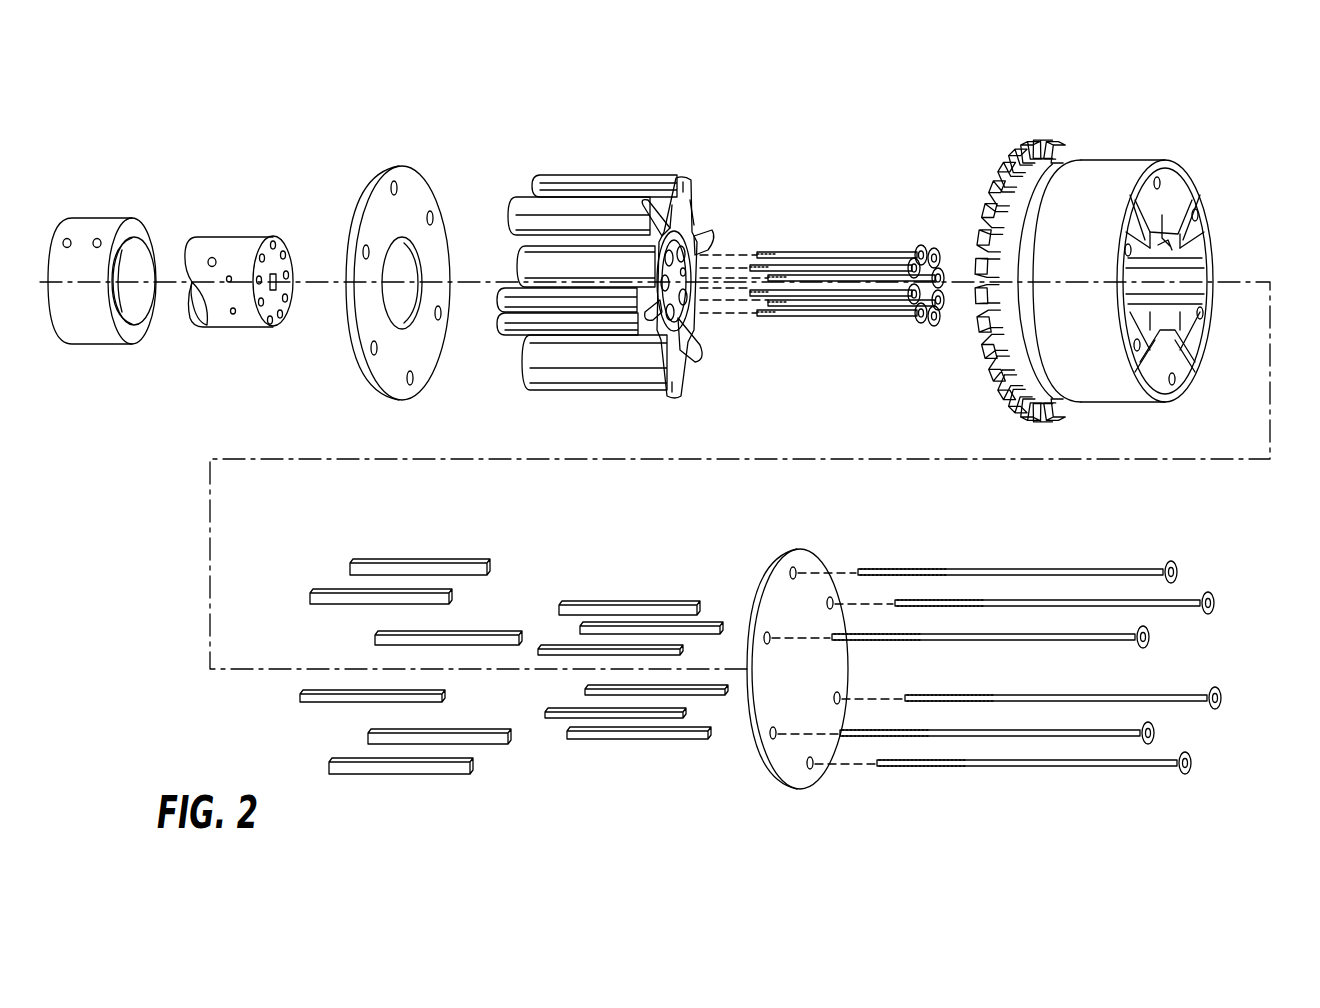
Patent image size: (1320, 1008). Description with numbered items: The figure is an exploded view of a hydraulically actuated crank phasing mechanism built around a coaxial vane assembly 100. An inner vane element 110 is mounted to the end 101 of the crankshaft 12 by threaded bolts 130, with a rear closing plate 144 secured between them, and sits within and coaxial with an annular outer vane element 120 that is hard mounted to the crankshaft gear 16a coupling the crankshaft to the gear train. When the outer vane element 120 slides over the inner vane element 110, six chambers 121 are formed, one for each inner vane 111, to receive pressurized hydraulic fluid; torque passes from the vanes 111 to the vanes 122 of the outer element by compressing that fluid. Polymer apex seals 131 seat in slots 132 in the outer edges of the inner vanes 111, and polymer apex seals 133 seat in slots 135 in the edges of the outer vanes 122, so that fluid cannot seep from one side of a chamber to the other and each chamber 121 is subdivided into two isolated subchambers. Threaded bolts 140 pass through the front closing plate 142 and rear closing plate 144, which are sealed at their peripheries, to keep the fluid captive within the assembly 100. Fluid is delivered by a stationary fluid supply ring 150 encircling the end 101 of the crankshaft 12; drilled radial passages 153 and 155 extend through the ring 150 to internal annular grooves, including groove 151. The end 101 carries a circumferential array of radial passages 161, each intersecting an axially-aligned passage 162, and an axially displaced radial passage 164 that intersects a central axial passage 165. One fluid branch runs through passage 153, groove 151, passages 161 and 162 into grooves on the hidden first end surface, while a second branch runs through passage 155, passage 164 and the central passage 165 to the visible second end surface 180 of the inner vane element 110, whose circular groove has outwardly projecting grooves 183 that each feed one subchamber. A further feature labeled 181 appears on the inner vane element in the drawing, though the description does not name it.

The coaxial vane assembly 100 is at (1230, 110).
The inner vane element 110 is at (500, 199).
The vanes 111 is at (690, 205).
The slots 132 is at (690, 180).
The outwardly-projecting grooves 183 is at (650, 258).
The second end surface 180 is at (678, 320).
The fan blade 181 is at (700, 340).
The threaded bolts 130 is at (850, 313).
The crankshaft gear 16a is at (1005, 183).
The annular outer vane element 120 is at (1097, 372).
The vanes 122 is at (1198, 225).
The chambers 121 is at (1190, 265).
The slots 135 is at (1168, 240).
The rear closing plate 144 is at (384, 368).
The fluid supply ring 150 is at (82, 318).
The annular groove 151 is at (132, 268).
The drilled radial passage 153 is at (97, 241).
The drilled radial passage 155 is at (67, 241).
The end of the crankshaft 101 is at (232, 328).
The crankshaft 12 is at (215, 305).
The radial passage 164 is at (212, 260).
The radial passages 161 is at (233, 250).
The axially-aligned passages 162 is at (278, 247).
The central axial passage 165 is at (278, 291).
The polymer apex seals 133 is at (415, 564).
The polymer apex seals 131 is at (644, 608).
The front closing plate 142 is at (800, 760).
The threaded bolts 140 is at (1093, 572).